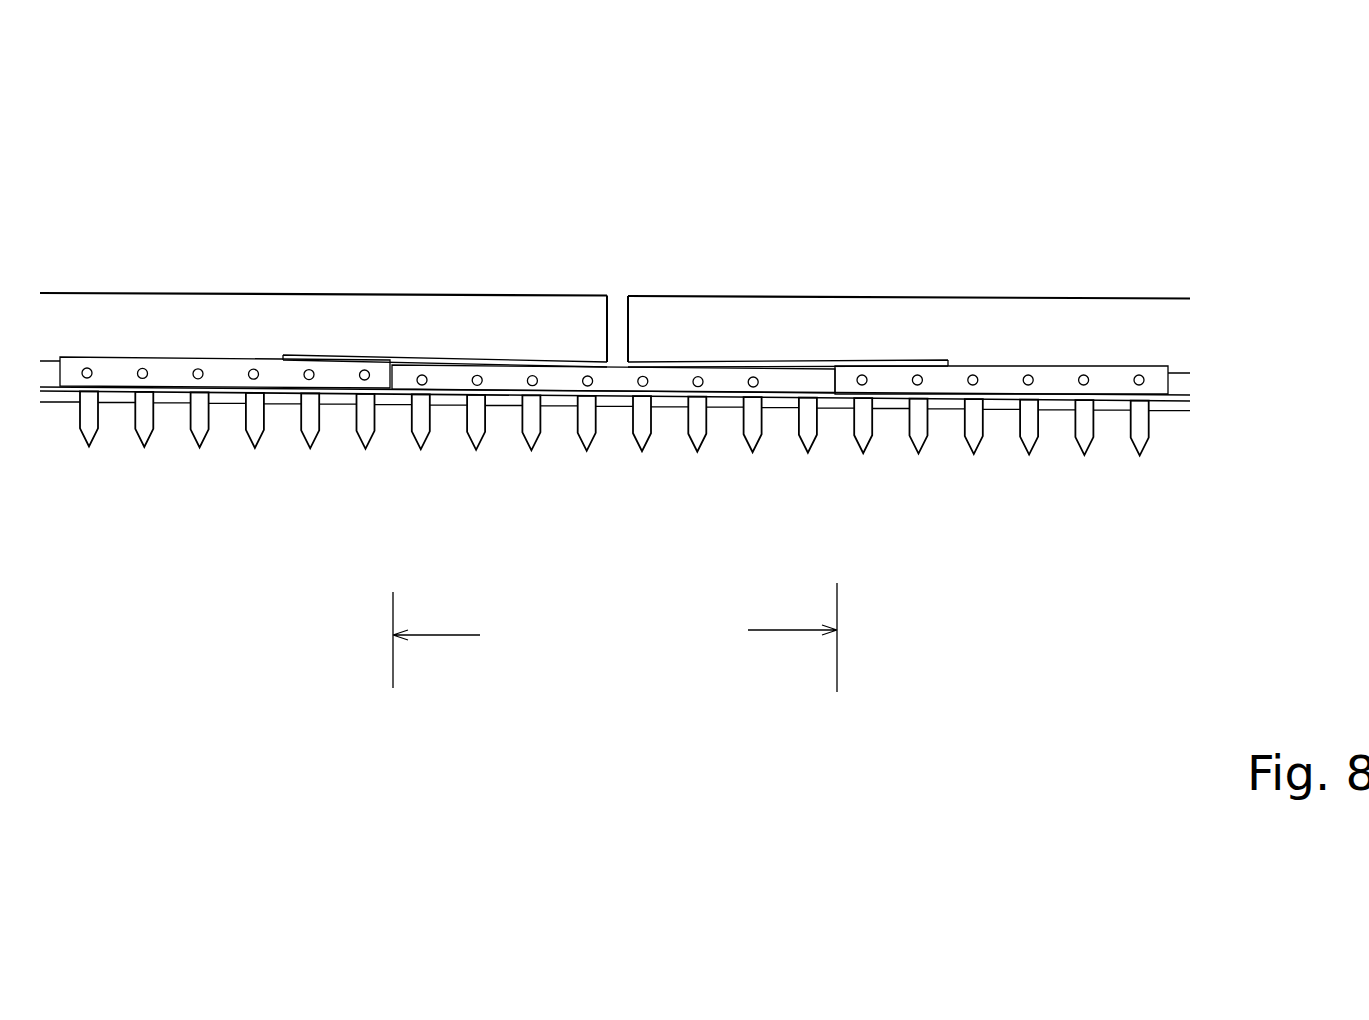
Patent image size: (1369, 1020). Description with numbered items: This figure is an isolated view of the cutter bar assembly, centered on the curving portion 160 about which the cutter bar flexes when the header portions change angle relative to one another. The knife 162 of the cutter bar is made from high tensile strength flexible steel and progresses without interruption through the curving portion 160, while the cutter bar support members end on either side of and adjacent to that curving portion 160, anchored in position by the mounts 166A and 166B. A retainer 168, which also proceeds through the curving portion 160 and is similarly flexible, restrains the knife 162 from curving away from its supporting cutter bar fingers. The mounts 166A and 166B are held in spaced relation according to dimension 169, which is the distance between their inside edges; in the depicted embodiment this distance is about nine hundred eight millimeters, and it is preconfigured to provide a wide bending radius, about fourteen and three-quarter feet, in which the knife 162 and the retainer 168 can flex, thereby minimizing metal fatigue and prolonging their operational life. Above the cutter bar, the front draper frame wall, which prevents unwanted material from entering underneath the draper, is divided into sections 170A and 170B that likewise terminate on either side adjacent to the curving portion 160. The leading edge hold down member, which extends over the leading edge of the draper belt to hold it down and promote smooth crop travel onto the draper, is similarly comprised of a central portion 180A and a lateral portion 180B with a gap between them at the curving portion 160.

The curving portion 160 is at (620, 265).
The knife 162 is at (1058, 451).
The mount 166A is at (230, 360).
The mount 166B is at (1013, 360).
The retainer 168 is at (520, 357).
The dimension 169 is at (615, 637).
The front draper frame wall section 170A is at (368, 360).
The front draper frame wall section 170B is at (787, 358).
The hold down member portion 180A is at (117, 318).
The hold down member portion 180B is at (1120, 328).